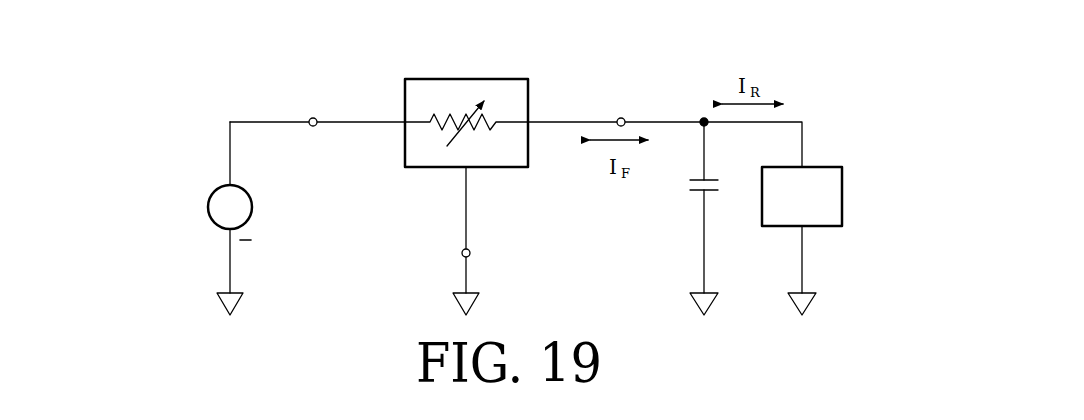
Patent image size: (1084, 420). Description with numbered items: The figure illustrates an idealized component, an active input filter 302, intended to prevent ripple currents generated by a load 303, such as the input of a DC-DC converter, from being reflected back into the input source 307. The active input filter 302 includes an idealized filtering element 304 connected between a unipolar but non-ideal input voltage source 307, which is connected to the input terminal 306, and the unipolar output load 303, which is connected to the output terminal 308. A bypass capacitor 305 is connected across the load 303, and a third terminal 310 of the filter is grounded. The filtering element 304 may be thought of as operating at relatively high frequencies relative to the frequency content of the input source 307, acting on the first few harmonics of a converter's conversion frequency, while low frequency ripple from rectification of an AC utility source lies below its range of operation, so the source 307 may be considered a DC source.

The active input filter 302 is at (207, 86).
The load 303 is at (822, 228).
The filtering element 304 is at (460, 110).
The bypass capacitor 305 is at (700, 193).
The input terminal 306 is at (313, 117).
The input voltage source 307 is at (253, 205).
The output terminal 308 is at (623, 117).
The third terminal 310 is at (462, 253).